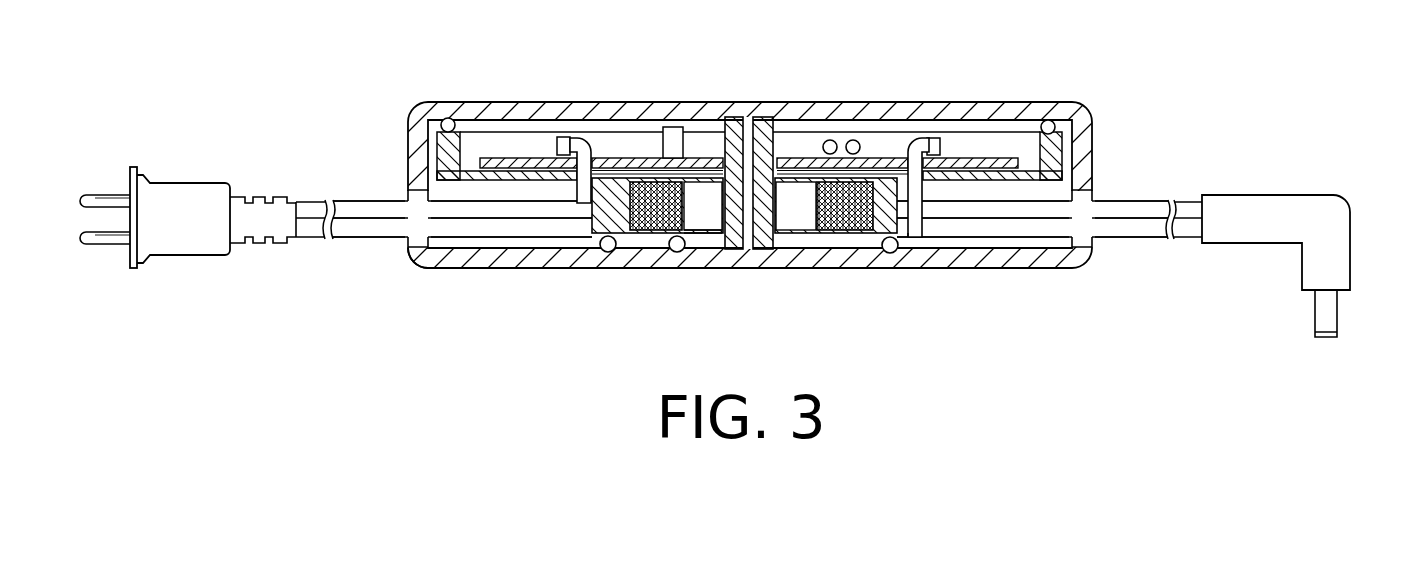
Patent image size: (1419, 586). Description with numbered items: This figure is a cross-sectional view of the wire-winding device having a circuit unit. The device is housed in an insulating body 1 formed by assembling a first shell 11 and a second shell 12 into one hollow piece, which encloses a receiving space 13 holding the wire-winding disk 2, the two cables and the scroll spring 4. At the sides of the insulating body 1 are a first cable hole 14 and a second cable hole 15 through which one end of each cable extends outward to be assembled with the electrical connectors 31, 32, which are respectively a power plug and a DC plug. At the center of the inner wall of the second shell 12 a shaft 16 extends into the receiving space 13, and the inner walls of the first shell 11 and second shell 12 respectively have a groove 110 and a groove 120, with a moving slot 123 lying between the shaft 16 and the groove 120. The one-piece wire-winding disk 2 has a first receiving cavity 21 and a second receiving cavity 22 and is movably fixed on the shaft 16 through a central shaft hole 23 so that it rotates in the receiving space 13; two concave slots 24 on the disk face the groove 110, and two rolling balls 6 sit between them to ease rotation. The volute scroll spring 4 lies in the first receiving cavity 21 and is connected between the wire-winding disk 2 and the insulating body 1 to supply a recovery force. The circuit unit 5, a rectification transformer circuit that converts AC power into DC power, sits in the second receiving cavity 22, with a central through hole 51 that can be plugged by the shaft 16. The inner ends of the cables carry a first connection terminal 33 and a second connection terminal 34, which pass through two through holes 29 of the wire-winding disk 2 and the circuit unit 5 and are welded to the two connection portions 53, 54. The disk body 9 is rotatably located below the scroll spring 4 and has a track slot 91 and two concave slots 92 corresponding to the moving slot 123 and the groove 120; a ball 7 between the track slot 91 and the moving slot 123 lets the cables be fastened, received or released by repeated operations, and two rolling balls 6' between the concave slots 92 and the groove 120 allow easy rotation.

The insulating body 1 is at (737, 198).
The wire-winding disk 2 is at (802, 163).
The scroll spring 4 is at (638, 226).
The circuit unit 5 is at (988, 148).
The rolling balls 6 is at (440, 77).
The rolling balls 6' is at (596, 290).
The ball 7 is at (673, 254).
The disk body 9 is at (807, 226).
The first shell 11 is at (1017, 108).
The second shell 12 is at (418, 258).
The receiving space 13 is at (477, 250).
The first cable hole 14 is at (408, 190).
The second cable hole 15 is at (1090, 247).
The shaft 16 is at (772, 117).
The first receiving cavity 21 is at (836, 263).
The second receiving cavity 22 is at (492, 150).
The shaft hole 23 is at (705, 130).
The concave slots 24 is at (1062, 152).
The through holes 29 is at (619, 253).
The electrical connector 31 is at (142, 190).
The electrical connector 32 is at (1347, 245).
The first connection terminal 33 is at (583, 138).
The second connection terminal 34 is at (922, 135).
The through hole 51 is at (797, 153).
The connection portion 53 is at (562, 137).
The connection portion 54 is at (936, 137).
The track slot 91 is at (685, 249).
The concave slots 92 is at (920, 229).
The groove 110 is at (1052, 119).
The groove 120 is at (892, 253).
The moving slot 123 is at (687, 252).